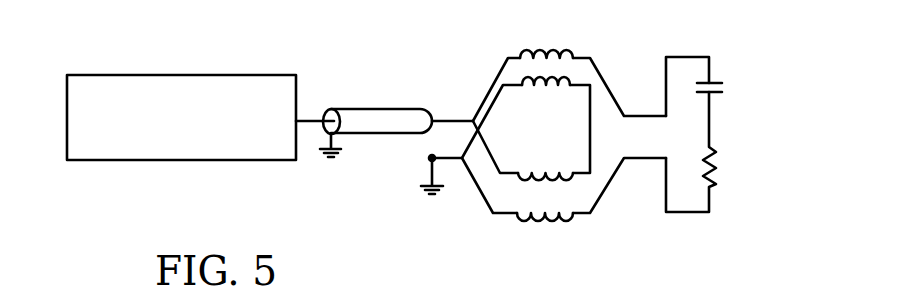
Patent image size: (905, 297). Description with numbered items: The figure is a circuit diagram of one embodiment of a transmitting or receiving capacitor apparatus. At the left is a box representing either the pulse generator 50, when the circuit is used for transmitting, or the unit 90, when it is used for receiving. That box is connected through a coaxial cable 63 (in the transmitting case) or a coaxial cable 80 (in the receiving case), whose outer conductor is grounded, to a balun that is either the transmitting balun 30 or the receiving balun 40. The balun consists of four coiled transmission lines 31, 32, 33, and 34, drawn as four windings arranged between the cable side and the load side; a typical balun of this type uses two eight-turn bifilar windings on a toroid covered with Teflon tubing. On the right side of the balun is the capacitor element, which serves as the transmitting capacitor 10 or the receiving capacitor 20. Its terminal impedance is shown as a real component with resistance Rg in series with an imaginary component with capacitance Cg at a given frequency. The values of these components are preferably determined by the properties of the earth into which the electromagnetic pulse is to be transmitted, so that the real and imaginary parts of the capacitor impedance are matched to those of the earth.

The pulse generator 50 is at (181, 118).
The unit 90 is at (181, 117).
The coaxial cable 63 is at (379, 116).
The coaxial cable 80 is at (379, 116).
The transmitting balun 30 is at (543, 155).
The receiving balun 40 is at (543, 155).
The coiled transmission line 31 is at (546, 38).
The coiled transmission line 32 is at (546, 103).
The coiled transmission line 33 is at (545, 158).
The coiled transmission line 34 is at (545, 236).
The transmitting capacitor 10 is at (738, 134).
The receiving capacitor 20 is at (738, 134).